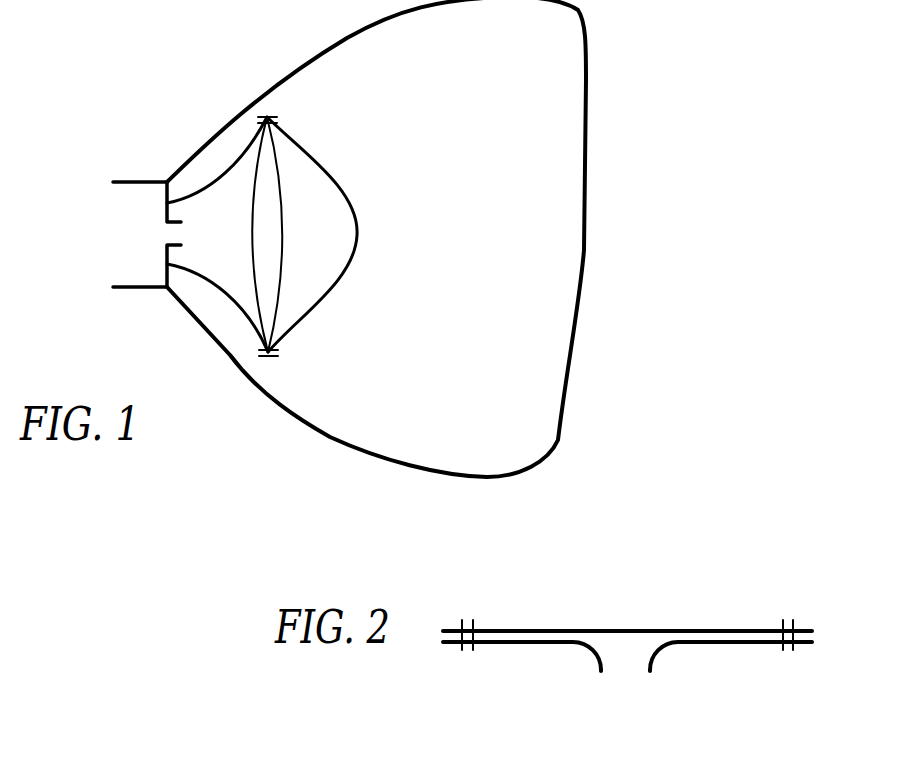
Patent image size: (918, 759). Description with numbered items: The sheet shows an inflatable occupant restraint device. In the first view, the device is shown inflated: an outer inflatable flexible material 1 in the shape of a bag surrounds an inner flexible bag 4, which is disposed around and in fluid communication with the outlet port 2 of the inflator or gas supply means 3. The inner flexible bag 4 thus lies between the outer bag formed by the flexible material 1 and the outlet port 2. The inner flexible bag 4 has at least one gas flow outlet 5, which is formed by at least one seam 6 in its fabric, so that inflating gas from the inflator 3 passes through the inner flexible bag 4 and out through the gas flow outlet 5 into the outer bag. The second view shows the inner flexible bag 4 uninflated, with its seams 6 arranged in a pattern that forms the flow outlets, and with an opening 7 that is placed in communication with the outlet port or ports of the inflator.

In FIG. 1, the outer inflatable flexible material 1 is at (587, 162).
In FIG. 1, the outlet port 2 is at (168, 235).
In FIG. 1, the inflator 3 is at (123, 246).
In FIG. 1, the inner flexible bag 4 is at (355, 265).
In FIG. 2, the inner flexible bag 4 is at (673, 598).
In FIG. 1, the gas flow outlet 5 is at (267, 215).
In FIG. 1, the seam 6 is at (273, 122).
In FIG. 2, the seam 6 is at (465, 650).
In FIG. 2, the opening 7 is at (627, 663).